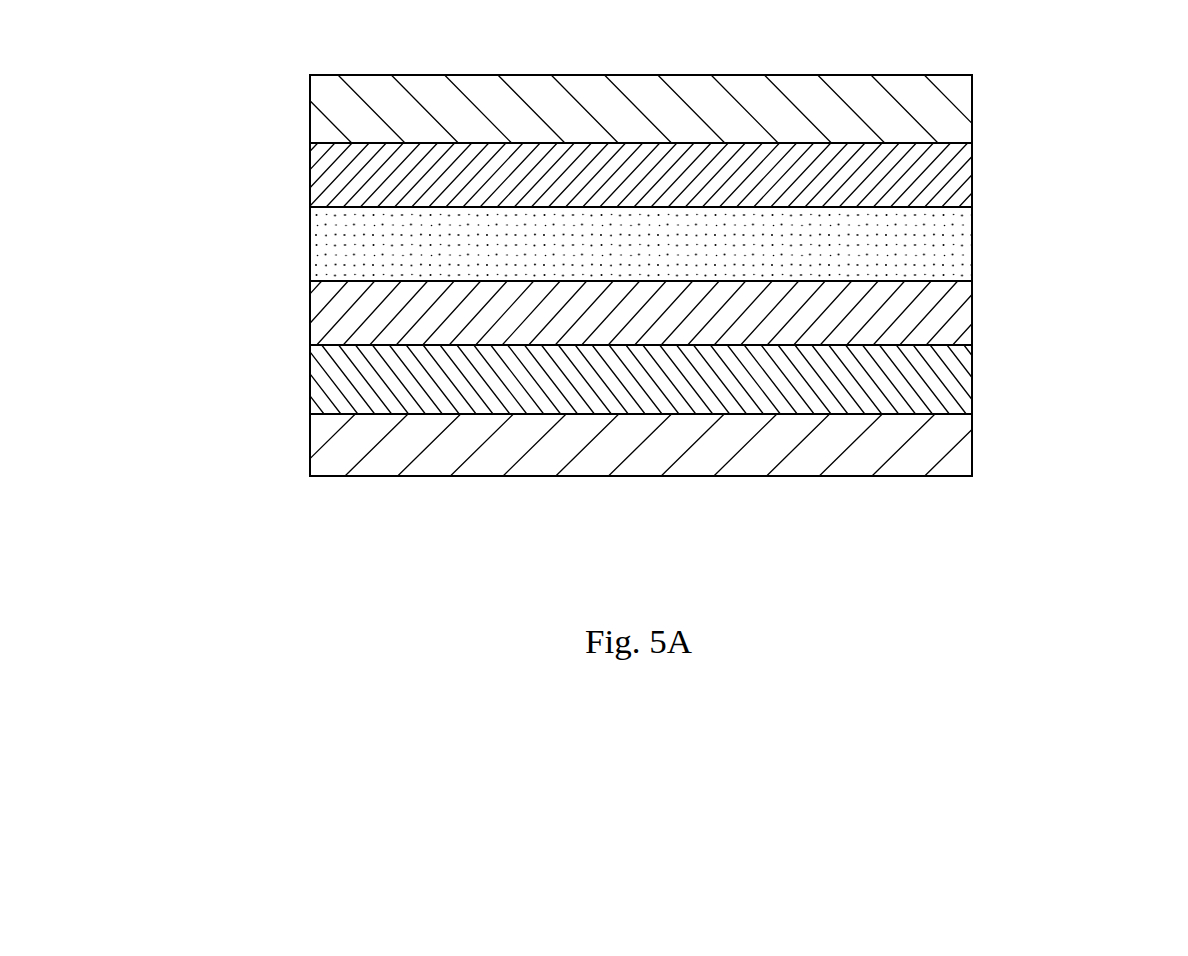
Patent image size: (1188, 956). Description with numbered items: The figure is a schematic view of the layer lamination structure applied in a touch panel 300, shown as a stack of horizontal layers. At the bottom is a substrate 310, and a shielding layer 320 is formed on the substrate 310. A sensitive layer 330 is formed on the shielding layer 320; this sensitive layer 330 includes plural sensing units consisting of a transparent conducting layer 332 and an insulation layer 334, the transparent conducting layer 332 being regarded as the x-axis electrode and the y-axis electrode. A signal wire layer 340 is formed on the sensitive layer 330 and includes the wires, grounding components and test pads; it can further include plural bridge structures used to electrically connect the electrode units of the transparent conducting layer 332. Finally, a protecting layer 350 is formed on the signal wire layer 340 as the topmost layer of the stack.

The touch panel 300 is at (224, 100).
The substrate 310 is at (958, 450).
The shielding layer 320 is at (958, 378).
The sensitive layer 330 is at (744, 276).
The transparent conducting layer 332 is at (955, 318).
The insulation layer 334 is at (953, 243).
The signal wire layer 340 is at (958, 173).
The protecting layer 350 is at (953, 107).